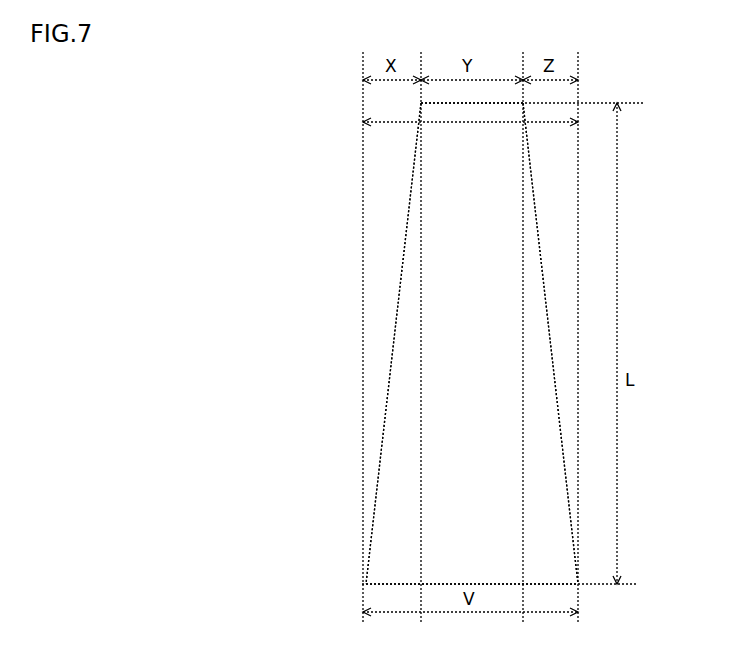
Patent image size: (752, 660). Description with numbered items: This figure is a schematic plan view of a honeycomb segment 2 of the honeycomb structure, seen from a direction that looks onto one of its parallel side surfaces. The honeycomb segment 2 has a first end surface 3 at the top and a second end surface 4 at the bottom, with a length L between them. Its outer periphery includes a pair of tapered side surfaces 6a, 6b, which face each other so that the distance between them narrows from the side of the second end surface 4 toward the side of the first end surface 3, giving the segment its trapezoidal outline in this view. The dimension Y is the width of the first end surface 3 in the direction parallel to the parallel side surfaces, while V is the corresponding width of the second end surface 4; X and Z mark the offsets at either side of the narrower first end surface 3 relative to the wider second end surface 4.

The honeycomb segment 2 is at (398, 268).
The first end surface 3 is at (463, 103).
The second end surface 4 is at (380, 583).
The tapered side surface 6a is at (391, 345).
The tapered side surface 6b is at (544, 292).